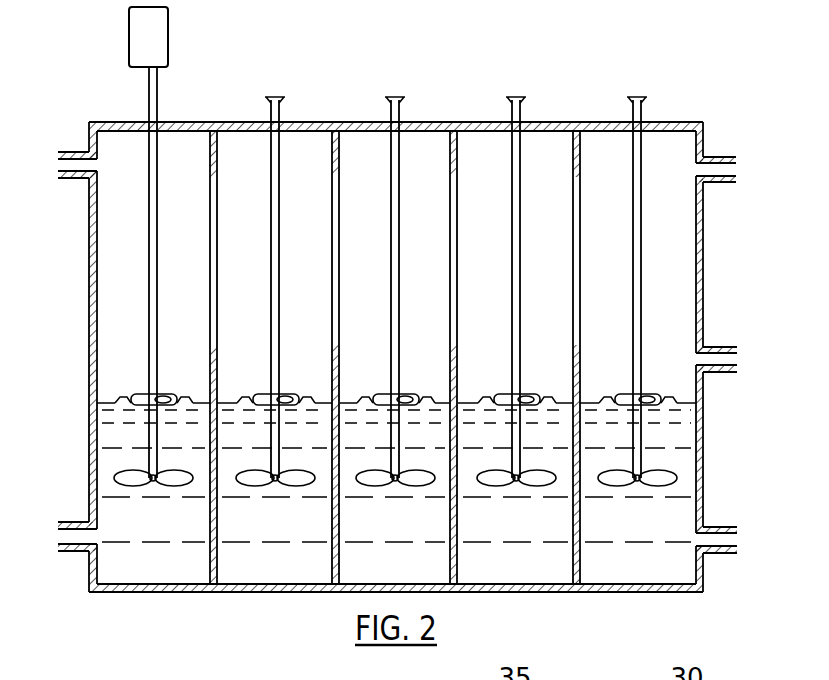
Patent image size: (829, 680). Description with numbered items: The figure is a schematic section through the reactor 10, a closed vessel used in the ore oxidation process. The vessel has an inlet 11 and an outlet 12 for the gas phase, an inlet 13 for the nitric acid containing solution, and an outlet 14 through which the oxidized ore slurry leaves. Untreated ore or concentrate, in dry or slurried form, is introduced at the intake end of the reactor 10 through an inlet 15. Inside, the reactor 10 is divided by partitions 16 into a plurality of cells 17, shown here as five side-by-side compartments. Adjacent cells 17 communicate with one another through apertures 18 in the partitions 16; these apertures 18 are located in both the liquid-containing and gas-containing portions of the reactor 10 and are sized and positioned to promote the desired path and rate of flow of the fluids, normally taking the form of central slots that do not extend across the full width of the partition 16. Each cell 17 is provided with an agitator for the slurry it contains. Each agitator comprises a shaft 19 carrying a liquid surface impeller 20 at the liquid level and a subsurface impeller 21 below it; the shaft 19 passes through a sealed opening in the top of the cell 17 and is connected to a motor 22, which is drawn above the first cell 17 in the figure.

The reactor 10 is at (663, 122).
The inlet 11 is at (717, 157).
The outlet 12 is at (68, 152).
The inlet 13 is at (722, 527).
The outlet 14 is at (74, 522).
The inlet 15 is at (711, 347).
The partition 16 is at (218, 161).
The cell 17 is at (188, 142).
The aperture 18 is at (458, 269).
The shaft 19 is at (156, 226).
The liquid surface impeller 20 is at (167, 393).
The subsurface impeller 21 is at (176, 487).
The motor 22 is at (169, 37).